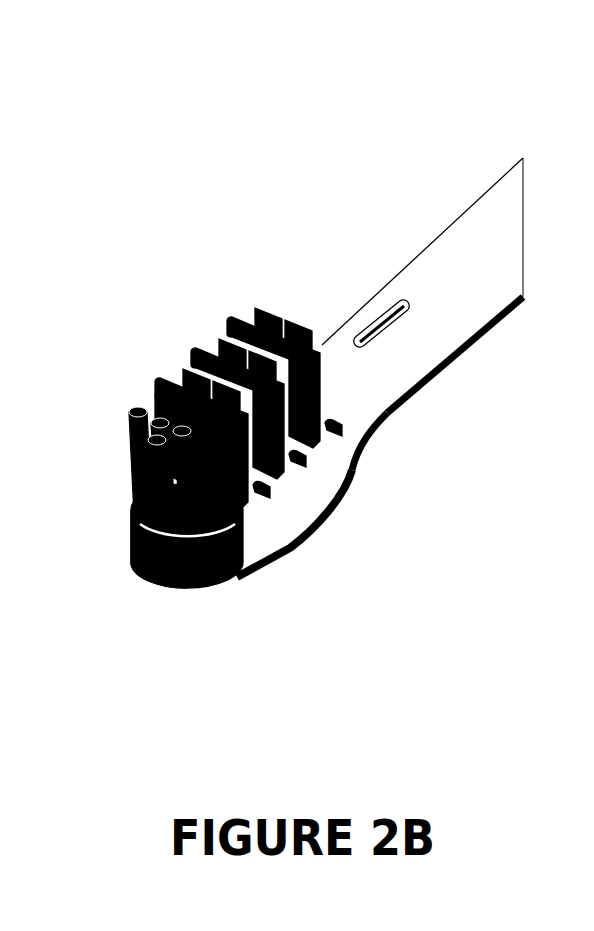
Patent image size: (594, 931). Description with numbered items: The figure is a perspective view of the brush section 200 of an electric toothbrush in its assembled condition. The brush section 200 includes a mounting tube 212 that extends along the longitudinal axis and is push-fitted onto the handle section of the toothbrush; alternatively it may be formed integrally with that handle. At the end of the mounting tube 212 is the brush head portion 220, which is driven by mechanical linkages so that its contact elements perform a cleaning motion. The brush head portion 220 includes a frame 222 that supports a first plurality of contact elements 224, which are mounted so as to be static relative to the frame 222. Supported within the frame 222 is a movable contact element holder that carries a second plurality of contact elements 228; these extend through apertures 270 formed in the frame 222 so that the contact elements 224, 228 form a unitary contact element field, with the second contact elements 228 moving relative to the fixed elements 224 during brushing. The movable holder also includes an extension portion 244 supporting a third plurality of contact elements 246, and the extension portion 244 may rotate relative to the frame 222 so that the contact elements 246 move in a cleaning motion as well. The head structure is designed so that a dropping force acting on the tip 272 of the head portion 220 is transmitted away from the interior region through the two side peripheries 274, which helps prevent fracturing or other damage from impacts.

The brush section 200 is at (479, 551).
The mounting tube 212 is at (443, 247).
The brush head portion 220 is at (222, 194).
The frame 222 is at (352, 460).
The first plurality of contact elements 224 is at (233, 317).
The second plurality of contact elements 228 is at (272, 310).
The extension portion 244 is at (187, 587).
The third plurality of contact elements 246 is at (133, 452).
The apertures 270 is at (331, 432).
The tip 272 is at (140, 563).
The side peripheries 274 is at (255, 545).